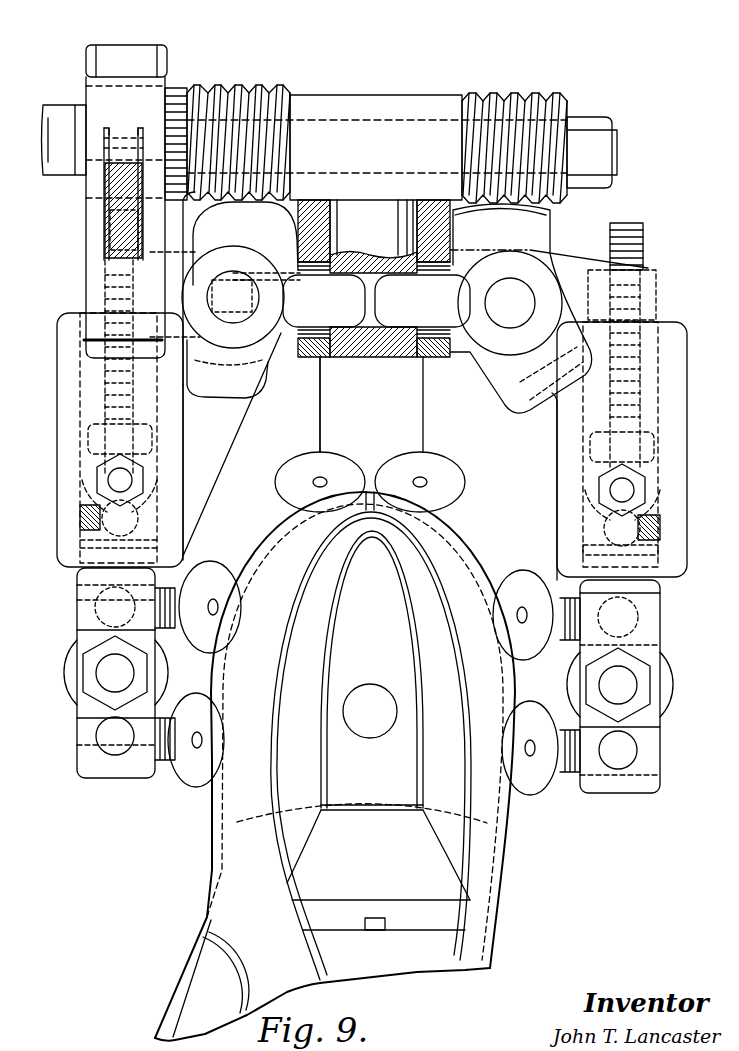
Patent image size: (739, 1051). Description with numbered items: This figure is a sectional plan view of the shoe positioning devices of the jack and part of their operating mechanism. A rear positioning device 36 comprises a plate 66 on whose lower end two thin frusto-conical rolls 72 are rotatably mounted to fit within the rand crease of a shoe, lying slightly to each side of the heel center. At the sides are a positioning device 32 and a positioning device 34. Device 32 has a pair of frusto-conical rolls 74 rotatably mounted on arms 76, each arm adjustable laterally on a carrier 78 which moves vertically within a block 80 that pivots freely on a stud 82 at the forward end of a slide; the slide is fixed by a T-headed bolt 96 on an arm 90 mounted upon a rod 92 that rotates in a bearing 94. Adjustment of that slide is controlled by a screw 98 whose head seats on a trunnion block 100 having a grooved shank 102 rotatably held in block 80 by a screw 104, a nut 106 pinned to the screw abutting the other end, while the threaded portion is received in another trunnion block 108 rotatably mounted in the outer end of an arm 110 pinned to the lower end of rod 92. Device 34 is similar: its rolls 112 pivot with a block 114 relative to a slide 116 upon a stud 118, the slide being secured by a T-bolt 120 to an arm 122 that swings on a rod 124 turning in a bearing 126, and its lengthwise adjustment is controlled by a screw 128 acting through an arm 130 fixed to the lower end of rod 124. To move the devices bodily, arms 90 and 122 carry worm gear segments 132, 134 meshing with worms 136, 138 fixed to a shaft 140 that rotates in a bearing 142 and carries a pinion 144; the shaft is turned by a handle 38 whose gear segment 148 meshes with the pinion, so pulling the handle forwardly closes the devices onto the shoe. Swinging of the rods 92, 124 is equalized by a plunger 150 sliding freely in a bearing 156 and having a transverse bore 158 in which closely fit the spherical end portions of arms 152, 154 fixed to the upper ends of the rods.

The positioning device 32 is at (532, 818).
The positioning device 34 is at (168, 800).
The positioning device 36 is at (435, 424).
The handle 38 is at (103, 180).
The plate 66 is at (330, 421).
The frusto-conical rolls 72 is at (282, 483).
The frusto-conical rolls 74 is at (515, 583).
The arms 76 is at (570, 727).
The carrier 78 is at (655, 643).
The block 80 is at (660, 700).
The stud 82 is at (628, 686).
The arm 90 is at (680, 348).
The rod 92 is at (506, 325).
The bearing 94 is at (456, 266).
The T-headed bolt 96 is at (640, 490).
The screw 98 is at (650, 374).
The trunnion block 100 is at (650, 490).
The grooved shank 102 is at (655, 553).
The screw 104 is at (660, 525).
The nut 106 is at (505, 332).
The trunnion block 108 is at (608, 266).
The arm 110 is at (558, 260).
The frusto-conical rolls 112 is at (215, 575).
The block 114 is at (70, 680).
The slide 116 is at (150, 650).
The stud 118 is at (107, 667).
The T-bolt 120 is at (108, 478).
The arm 122 is at (68, 352).
The rod 124 is at (233, 315).
The bearing 126 is at (290, 266).
The screw 128 is at (105, 373).
The arm 130 is at (173, 258).
The worm gear segment 132 is at (530, 223).
The worm gear segment 134 is at (278, 222).
The worm 136 is at (518, 95).
The worm 138 is at (246, 93).
The shaft 140 is at (618, 134).
The bearing 142 is at (316, 100).
The pinion 144 is at (176, 92).
The gear segment 148 is at (110, 55).
The plunger 150 is at (375, 213).
The arm 152 is at (455, 340).
The arm 154 is at (318, 326).
The bearing 156 is at (436, 210).
The transverse bore 158 is at (375, 345).